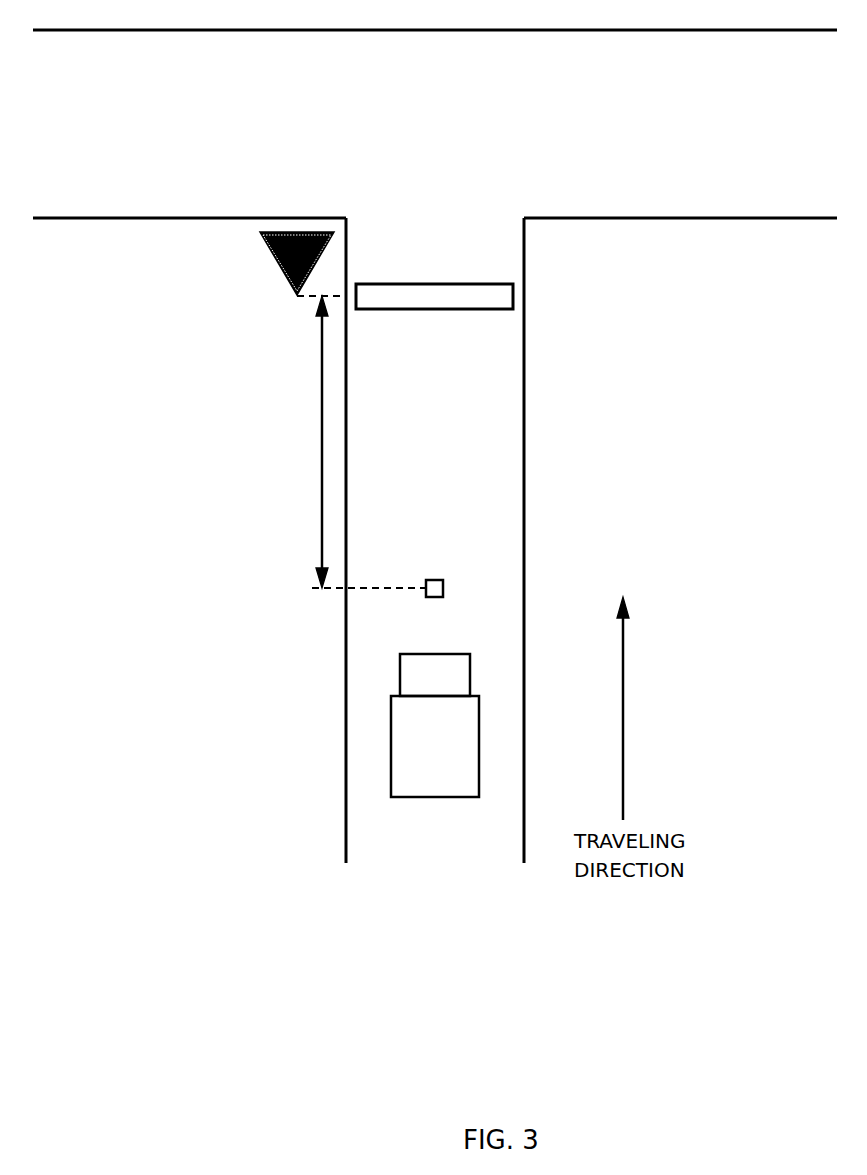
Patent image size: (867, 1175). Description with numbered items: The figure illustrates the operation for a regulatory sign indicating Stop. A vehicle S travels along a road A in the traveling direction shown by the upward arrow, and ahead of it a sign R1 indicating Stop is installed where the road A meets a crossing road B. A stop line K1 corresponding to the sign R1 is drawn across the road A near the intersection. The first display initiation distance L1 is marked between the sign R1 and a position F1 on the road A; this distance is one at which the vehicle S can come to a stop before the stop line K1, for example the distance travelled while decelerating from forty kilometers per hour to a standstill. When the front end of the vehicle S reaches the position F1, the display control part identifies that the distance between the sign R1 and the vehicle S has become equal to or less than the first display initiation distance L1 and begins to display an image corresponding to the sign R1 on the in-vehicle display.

The sign R1 is at (268, 238).
The stop line K1 is at (468, 284).
The position F1 is at (437, 580).
The vehicle S is at (445, 654).
The first display initiation distance L1 is at (313, 442).
The road A is at (435, 540).
The intersecting road B is at (435, 161).